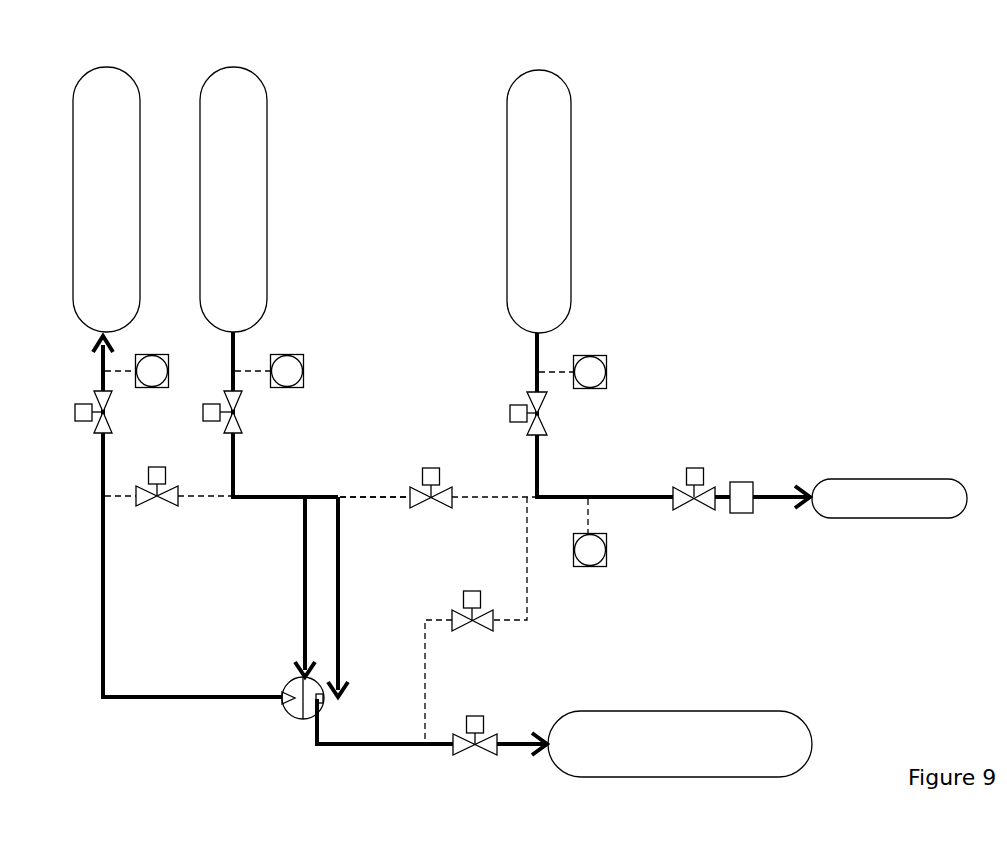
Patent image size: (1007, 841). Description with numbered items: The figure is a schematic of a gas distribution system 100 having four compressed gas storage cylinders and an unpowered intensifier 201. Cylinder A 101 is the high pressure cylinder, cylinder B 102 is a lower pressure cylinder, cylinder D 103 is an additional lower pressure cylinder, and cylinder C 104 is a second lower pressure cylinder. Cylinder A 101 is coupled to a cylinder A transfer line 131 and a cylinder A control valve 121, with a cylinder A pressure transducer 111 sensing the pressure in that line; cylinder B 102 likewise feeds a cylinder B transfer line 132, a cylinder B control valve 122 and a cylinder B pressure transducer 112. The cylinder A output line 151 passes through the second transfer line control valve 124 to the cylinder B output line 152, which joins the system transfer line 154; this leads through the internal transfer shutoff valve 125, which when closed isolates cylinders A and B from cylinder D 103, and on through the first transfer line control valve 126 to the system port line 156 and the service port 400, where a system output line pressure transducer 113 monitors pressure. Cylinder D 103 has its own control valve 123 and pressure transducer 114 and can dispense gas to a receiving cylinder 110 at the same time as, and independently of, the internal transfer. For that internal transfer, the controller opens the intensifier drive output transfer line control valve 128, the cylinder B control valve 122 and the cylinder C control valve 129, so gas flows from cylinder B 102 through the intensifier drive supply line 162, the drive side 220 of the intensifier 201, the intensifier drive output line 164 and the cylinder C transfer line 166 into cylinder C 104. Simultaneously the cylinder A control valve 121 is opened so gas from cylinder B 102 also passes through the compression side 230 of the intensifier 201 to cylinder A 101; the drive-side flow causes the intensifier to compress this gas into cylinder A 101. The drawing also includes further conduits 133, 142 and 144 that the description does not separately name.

The gas distribution system 100 is at (760, 133).
The cylinder A 101 is at (97, 80).
The cylinder B 102 is at (227, 78).
The cylinder D 103 is at (530, 70).
The cylinder C 104 is at (648, 755).
The receiving cylinder 110 is at (892, 478).
The cylinder A pressure transducer 111 is at (156, 355).
The cylinder B pressure transducer 112 is at (305, 371).
The system output line pressure transducer 113 is at (596, 566).
The pressure transducer 114 is at (609, 372).
The cylinder A control valve 121 is at (80, 405).
The cylinder B control valve 122 is at (245, 404).
The control valve 123 is at (547, 416).
The second transfer line control valve 124 is at (153, 510).
The internal transfer shutoff valve 125 is at (440, 470).
The first transfer line control valve 126 is at (680, 510).
The intensifier drive output transfer line control valve 128 is at (470, 634).
The cylinder C control valve 129 is at (485, 755).
The cylinder A transfer line 131 is at (97, 350).
The cylinder B transfer line 132 is at (238, 357).
The conduit from tank D 133 is at (542, 357).
The conduit to mixer 142 is at (302, 592).
The conduit to mixer 144 is at (100, 592).
The cylinder A output line 151 is at (113, 495).
The cylinder B output line 152 is at (265, 495).
The system transfer line 154 is at (375, 495).
The system port line 156 is at (478, 495).
The intensifier drive supply line 162 is at (340, 610).
The intensifier drive output line 164 is at (393, 746).
The cylinder C transfer line 166 is at (527, 750).
The unpowered intensifier 201 is at (292, 720).
The drive side 220 is at (323, 699).
The compression side 230 is at (287, 686).
The service port 400 is at (742, 515).